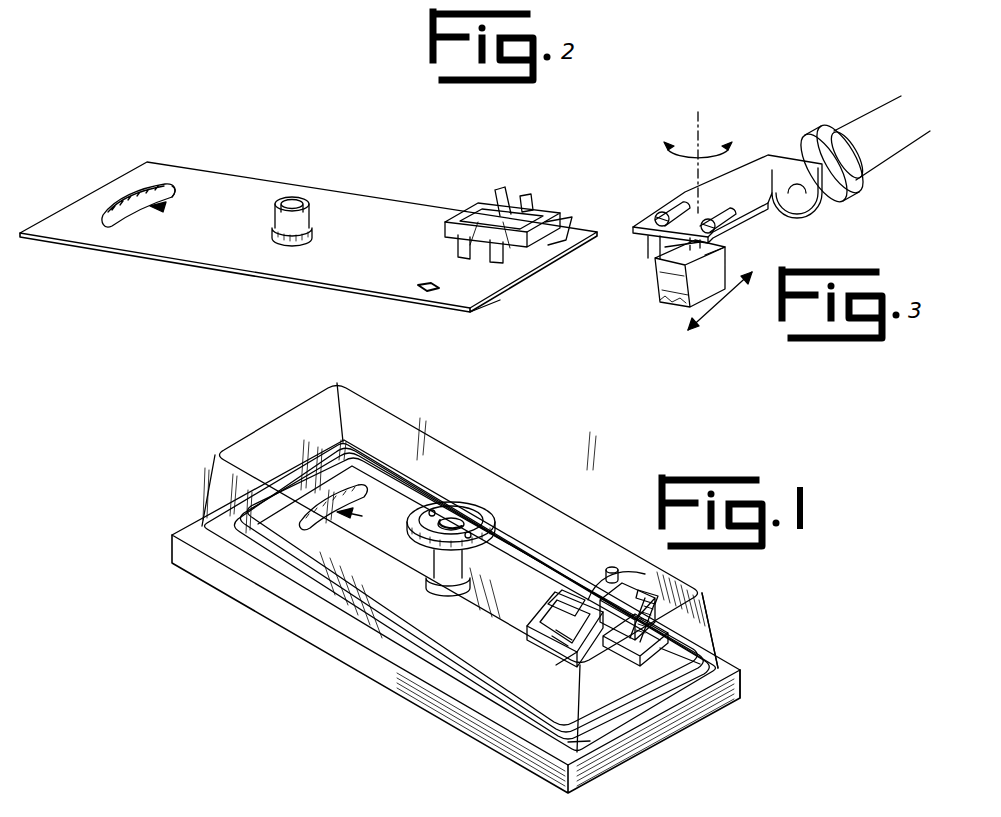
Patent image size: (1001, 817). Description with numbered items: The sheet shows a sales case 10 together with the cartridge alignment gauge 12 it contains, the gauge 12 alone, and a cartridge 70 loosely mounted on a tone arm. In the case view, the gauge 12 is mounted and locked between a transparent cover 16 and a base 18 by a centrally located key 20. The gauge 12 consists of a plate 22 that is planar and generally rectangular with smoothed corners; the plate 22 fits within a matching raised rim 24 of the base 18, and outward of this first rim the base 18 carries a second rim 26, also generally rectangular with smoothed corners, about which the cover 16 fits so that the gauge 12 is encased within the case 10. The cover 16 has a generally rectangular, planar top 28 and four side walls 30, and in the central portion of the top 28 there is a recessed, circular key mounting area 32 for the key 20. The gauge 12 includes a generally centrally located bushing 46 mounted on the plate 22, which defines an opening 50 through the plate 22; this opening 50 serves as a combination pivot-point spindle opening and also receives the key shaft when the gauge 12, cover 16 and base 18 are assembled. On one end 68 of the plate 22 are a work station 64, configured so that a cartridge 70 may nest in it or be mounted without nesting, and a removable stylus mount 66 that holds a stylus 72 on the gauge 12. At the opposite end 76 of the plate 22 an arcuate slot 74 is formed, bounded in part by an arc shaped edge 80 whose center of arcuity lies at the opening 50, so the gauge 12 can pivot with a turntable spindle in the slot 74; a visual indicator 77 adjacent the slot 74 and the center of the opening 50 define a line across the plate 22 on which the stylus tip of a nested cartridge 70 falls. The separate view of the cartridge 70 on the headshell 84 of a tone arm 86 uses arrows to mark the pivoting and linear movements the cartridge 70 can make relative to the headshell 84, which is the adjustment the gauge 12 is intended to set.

In FIG. 1, the sales case 10 is at (782, 667).
In FIG. 2, the gauge 12 is at (177, 250).
In FIG. 1, the gauge 12 is at (433, 618).
In FIG. 1, the transparent cover 16 is at (705, 595).
In FIG. 1, the base 18 is at (657, 730).
In FIG. 1, the key 20 is at (460, 517).
In FIG. 2, the plate 22 is at (381, 268).
In FIG. 1, the raised rim 24 is at (663, 660).
In FIG. 1, the second rim 26 is at (588, 742).
In FIG. 1, the top 28 is at (518, 510).
In FIG. 1, the side walls 30 is at (277, 418).
In FIG. 1, the key mounting area 32 is at (493, 525).
In FIG. 2, the bushing 46 is at (312, 208).
In FIG. 2, the opening 50 is at (298, 202).
In FIG. 2, the work station 64 is at (532, 213).
In FIG. 1, the work station 64 is at (663, 622).
In FIG. 1, the stylus mount 66 is at (550, 668).
In FIG. 2, the end 68 is at (500, 283).
In FIG. 1, the end 68 is at (565, 700).
In FIG. 3, the cartridge 70 is at (668, 277).
In FIG. 1, the cartridge 70 is at (656, 574).
In FIG. 1, the stylus 72 is at (604, 578).
In FIG. 2, the slot 74 is at (173, 196).
In FIG. 1, the slot 74 is at (367, 488).
In FIG. 2, the end 76 is at (108, 190).
In FIG. 2, the visual indicator 77 is at (152, 208).
In FIG. 1, the visual indicator 77 is at (377, 500).
In FIG. 2, the arc shaped edge 80 is at (185, 204).
In FIG. 3, the headshell 84 is at (751, 170).
In FIG. 3, the tone arm 86 is at (848, 126).